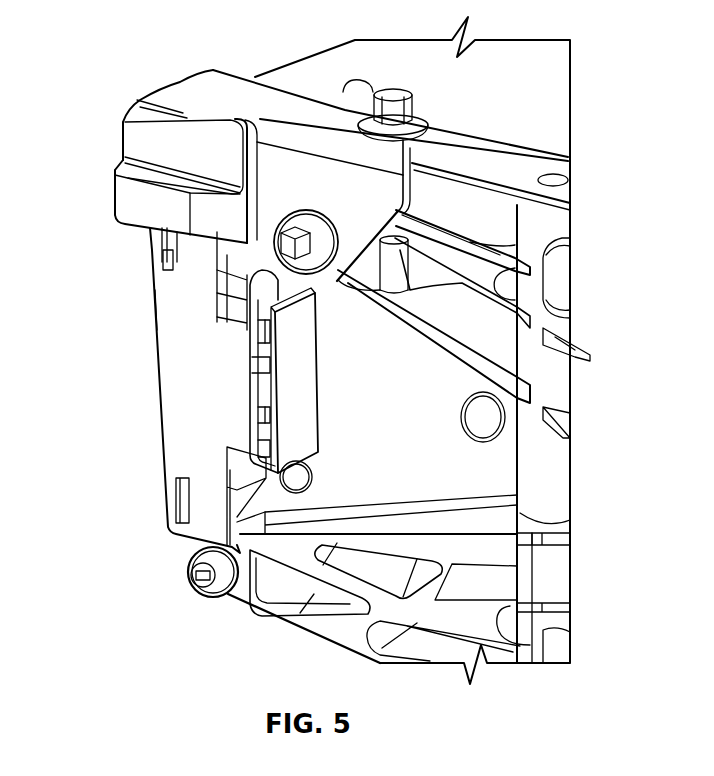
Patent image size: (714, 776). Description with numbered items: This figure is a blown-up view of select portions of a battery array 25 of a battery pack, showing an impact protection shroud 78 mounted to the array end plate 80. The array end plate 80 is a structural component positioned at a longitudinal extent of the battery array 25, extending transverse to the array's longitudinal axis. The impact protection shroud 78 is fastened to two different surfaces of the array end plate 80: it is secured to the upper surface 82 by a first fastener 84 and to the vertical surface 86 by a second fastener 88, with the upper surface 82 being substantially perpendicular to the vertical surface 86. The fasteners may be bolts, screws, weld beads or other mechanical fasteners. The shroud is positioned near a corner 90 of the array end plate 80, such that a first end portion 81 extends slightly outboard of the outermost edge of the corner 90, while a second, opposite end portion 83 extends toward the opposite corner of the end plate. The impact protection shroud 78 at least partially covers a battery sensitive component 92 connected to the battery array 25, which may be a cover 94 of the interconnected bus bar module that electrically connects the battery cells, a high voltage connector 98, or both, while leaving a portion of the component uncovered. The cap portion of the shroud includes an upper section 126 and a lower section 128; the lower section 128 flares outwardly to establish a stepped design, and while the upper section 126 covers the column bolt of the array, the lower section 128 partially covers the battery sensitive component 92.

The battery array 25 is at (540, 88).
The impact protection shroud 78 is at (163, 88).
The array end plate 80 is at (538, 486).
The first end portion 81 is at (115, 163).
The upper surface 82 is at (473, 157).
The second end portion 83 is at (415, 207).
The first fastener 84 is at (397, 95).
The vertical surface 86 is at (422, 382).
The second fastener 88 is at (290, 270).
The corner 90 is at (295, 55).
The battery sensitive component 92 is at (200, 412).
The cover 94 is at (173, 292).
The high voltage connector 98 is at (302, 422).
The upper section 126 is at (160, 145).
The lower section 128 is at (135, 198).